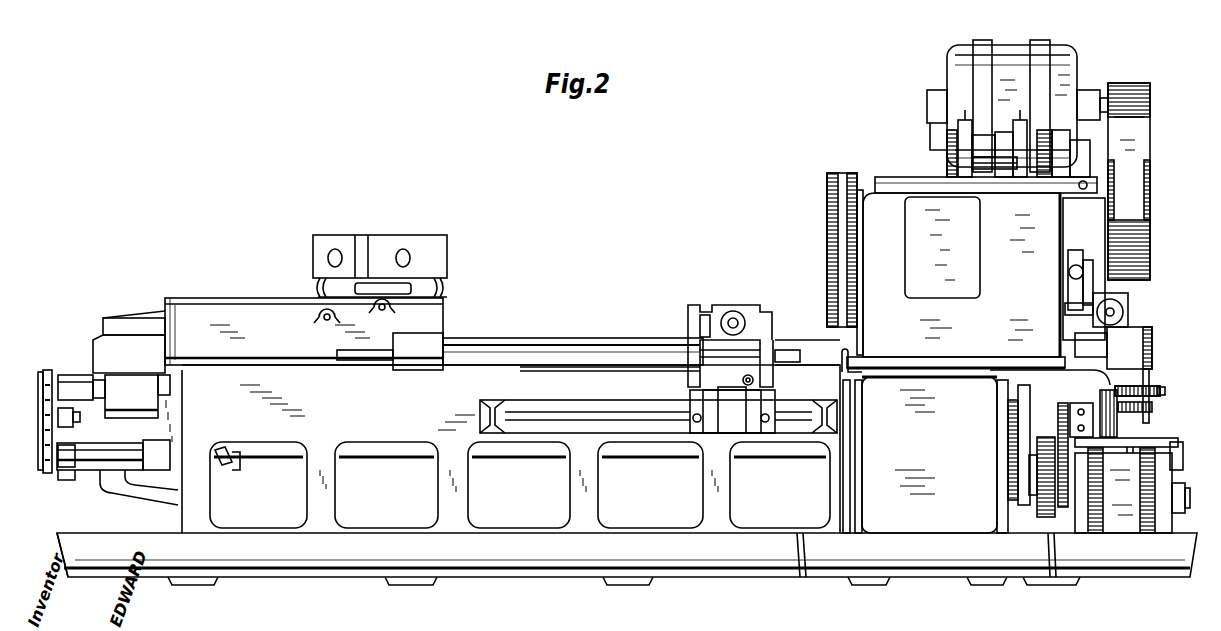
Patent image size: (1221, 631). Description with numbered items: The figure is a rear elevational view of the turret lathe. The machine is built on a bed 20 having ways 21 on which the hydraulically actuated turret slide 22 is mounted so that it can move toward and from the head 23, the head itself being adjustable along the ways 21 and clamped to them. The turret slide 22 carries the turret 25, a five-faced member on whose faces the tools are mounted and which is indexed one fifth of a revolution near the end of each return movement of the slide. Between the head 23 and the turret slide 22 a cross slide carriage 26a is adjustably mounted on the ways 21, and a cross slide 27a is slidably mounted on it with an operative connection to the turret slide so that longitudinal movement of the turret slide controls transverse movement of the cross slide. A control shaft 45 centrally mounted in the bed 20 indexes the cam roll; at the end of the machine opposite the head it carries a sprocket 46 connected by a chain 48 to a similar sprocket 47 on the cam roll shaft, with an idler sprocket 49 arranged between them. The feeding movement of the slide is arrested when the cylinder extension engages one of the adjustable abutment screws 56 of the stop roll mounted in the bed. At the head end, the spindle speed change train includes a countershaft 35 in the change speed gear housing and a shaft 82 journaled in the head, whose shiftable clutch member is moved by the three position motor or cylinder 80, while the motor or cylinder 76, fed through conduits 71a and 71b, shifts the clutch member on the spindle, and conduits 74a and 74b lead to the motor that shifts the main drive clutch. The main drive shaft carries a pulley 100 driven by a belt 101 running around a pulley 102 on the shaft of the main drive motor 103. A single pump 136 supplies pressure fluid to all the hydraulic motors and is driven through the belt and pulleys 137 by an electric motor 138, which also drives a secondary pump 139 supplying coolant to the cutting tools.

The bed 20 is at (511, 449).
The ways 21 is at (580, 345).
The turret slide 22 is at (235, 305).
The head 23 is at (966, 270).
The turret 25 is at (385, 240).
The cross slide carriage 26a is at (770, 340).
The cross slide 27a is at (730, 309).
The countershaft 35 is at (1150, 342).
The control shaft 45 is at (118, 450).
The sprocket 46 is at (58, 483).
The sprocket 47 is at (50, 378).
The chain 48 is at (66, 436).
The idler sprocket 49 is at (40, 372).
The adjustable abutment screw 56 is at (1162, 387).
The conduit 71a is at (1004, 132).
The conduit 71b is at (927, 103).
The conduit 74a is at (965, 112).
The conduit 74b is at (1020, 112).
The motor or cylinder 76 is at (958, 147).
The three position motor or cylinder 80 is at (1130, 305).
The shaft 82 is at (968, 161).
The pulley 100 is at (1150, 200).
The belt 101 is at (1150, 150).
The pulley 102 is at (1150, 95).
The main drive motor 103 is at (1068, 48).
The pump 136 is at (925, 441).
The belt and pulleys 137 is at (1040, 478).
The electric motor 138 is at (1132, 485).
The secondary pump 139 is at (1153, 411).